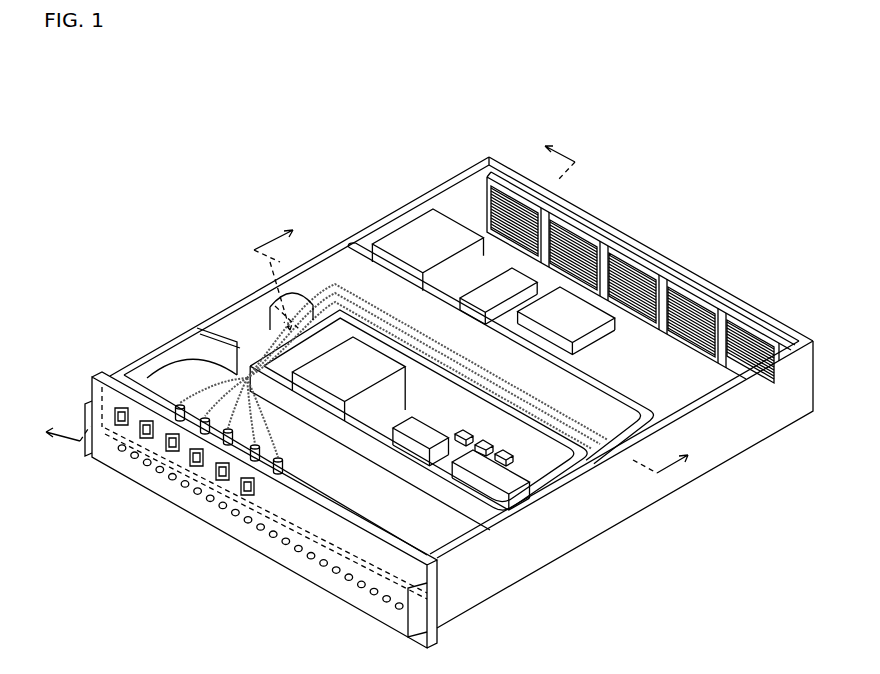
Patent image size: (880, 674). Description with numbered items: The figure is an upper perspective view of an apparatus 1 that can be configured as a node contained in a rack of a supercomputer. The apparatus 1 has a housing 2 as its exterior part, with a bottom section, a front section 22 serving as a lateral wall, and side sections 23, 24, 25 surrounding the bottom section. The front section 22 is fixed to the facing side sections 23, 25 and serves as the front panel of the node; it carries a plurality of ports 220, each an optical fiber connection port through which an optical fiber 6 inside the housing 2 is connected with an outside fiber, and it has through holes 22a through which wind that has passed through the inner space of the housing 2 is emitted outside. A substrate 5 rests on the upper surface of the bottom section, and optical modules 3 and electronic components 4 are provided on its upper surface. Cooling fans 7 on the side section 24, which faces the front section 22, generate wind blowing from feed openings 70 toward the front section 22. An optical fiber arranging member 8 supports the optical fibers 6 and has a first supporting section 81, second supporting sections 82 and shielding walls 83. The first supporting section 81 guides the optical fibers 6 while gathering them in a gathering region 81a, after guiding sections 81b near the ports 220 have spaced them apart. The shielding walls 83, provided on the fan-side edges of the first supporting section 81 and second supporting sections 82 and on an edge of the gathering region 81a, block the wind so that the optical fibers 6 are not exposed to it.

The apparatus 1 is at (758, 98).
The housing 2 is at (690, 502).
The optical modules 3 is at (592, 525).
The electronic components 4 is at (573, 322).
The substrate 5 is at (693, 392).
The optical fibers 6 is at (585, 418).
The cooling fans 7 is at (747, 320).
The feed openings 70 is at (687, 310).
The optical fiber arranging member 8 is at (640, 397).
The first supporting section 81 is at (385, 250).
The gathering region 81a is at (245, 342).
The guiding sections 81b is at (177, 403).
The second supporting sections 82 is at (275, 306).
The shielding walls 83 is at (410, 248).
The front section 22 is at (377, 612).
The through holes 22a is at (347, 580).
The ports 220 is at (122, 432).
The side section 23 is at (477, 595).
The side section 24 is at (492, 160).
The side section 25 is at (463, 190).